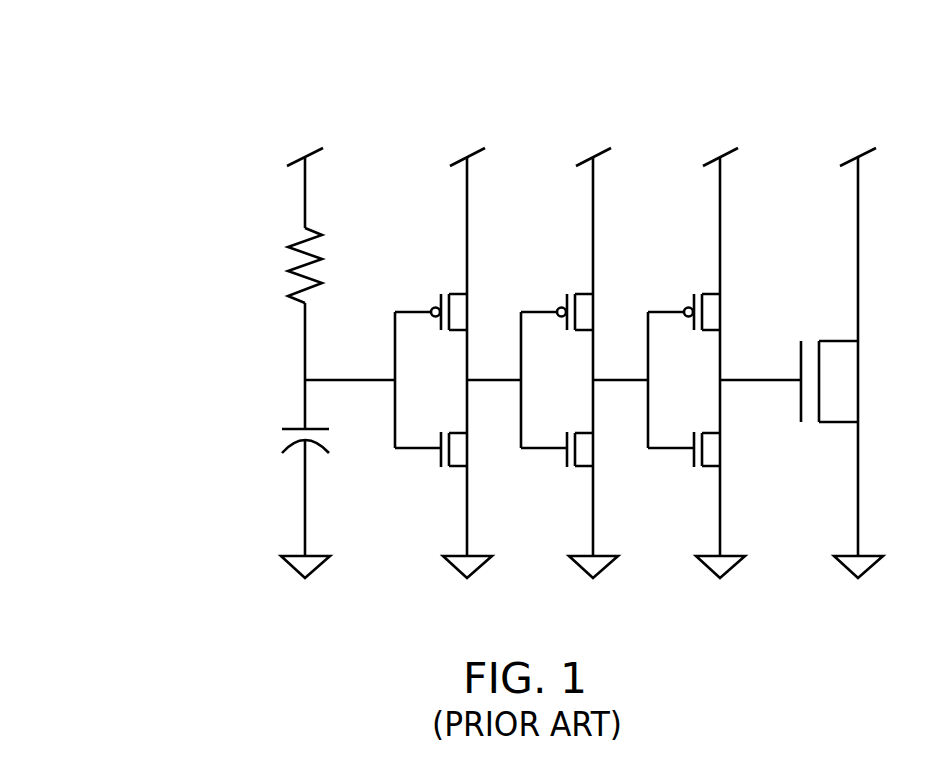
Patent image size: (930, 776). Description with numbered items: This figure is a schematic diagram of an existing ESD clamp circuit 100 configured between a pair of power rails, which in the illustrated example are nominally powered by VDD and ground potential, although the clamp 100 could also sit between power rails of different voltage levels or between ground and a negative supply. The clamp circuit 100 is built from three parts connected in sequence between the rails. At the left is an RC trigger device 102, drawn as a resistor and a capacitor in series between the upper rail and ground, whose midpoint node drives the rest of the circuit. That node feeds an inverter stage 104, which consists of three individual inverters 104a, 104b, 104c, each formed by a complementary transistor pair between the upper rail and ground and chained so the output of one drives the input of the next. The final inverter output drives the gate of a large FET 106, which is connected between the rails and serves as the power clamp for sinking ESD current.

The ESD clamp circuit 100 is at (128, 209).
The RC trigger device 102 is at (265, 208).
The inverter stage 104 is at (422, 140).
The inverter 104a is at (462, 403).
The inverter 104b is at (569, 363).
The inverter 104c is at (696, 363).
The large FET 106 is at (832, 422).